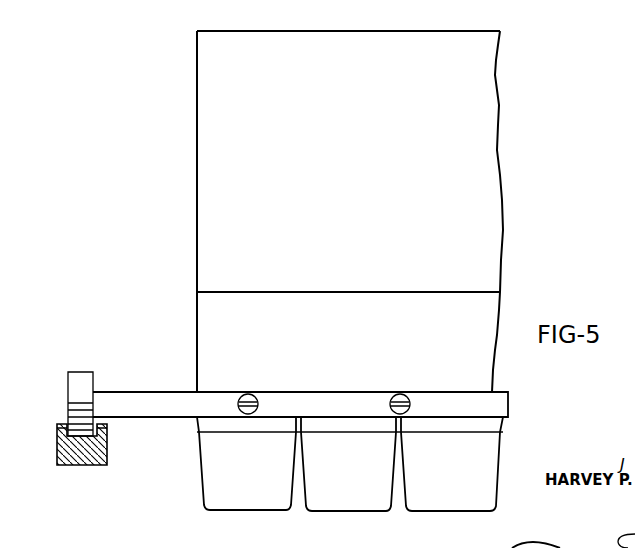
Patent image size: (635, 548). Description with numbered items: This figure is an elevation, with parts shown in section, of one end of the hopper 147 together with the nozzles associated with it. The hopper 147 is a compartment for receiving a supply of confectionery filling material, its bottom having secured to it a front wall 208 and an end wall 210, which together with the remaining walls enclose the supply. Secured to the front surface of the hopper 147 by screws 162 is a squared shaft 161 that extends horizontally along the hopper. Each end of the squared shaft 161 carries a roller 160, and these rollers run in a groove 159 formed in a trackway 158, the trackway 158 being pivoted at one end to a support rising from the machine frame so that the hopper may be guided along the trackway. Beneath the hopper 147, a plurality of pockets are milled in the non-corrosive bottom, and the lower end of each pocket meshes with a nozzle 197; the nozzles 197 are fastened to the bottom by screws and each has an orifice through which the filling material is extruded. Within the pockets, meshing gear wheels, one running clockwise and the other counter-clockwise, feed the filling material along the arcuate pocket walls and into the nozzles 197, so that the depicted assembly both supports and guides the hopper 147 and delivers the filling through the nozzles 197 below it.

The hopper 147 is at (499, 101).
The trackway 158 is at (107, 462).
The groove 159 is at (58, 428).
The roller 160 is at (90, 372).
The squared shaft 161 is at (343, 392).
The screws 162 is at (257, 392).
The nozzle 197 is at (200, 492).
The front wall 208 is at (348, 211).
The end wall 210 is at (197, 84).